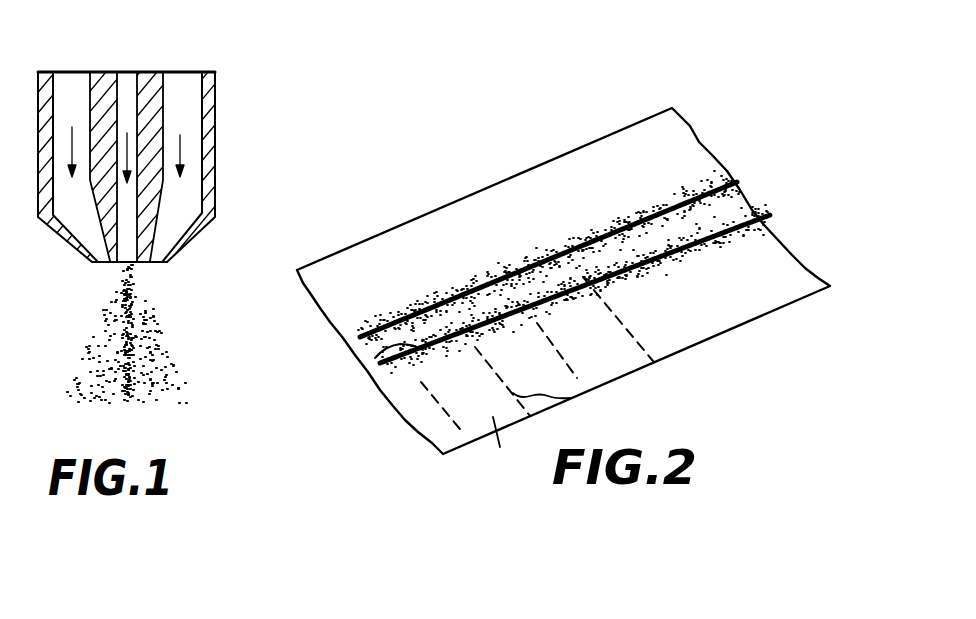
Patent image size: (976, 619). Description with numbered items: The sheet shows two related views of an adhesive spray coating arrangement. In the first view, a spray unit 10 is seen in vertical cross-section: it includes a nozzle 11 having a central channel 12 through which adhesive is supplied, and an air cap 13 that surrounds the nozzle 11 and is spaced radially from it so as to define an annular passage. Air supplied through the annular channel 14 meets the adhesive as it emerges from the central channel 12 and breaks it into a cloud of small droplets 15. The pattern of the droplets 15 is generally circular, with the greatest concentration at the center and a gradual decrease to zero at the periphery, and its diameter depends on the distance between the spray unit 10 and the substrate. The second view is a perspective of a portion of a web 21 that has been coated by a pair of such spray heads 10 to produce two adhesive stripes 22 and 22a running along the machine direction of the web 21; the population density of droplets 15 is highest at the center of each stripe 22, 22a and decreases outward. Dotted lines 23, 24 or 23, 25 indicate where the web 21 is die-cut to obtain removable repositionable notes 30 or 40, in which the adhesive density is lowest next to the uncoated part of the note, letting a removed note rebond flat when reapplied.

In FIG. 1, the spray unit 10 is at (236, 166).
In FIG. 1, the nozzle 11 is at (150, 83).
In FIG. 1, the central channel 12 is at (125, 85).
In FIG. 1, the air cap 13 is at (215, 83).
In FIG. 1, the annular air channel 14 is at (70, 87).
In FIG. 1, the adhesive droplets 15 is at (162, 368).
In FIG. 2, the web 21 is at (754, 332).
In FIG. 2, the adhesive stripe 22 is at (765, 188).
In FIG. 2, the second adhesive stripe 22a is at (730, 152).
In FIG. 2, the dotted cut lines 23 is at (432, 427).
In FIG. 2, the dotted cut line 24 is at (375, 358).
In FIG. 2, the dotted cut line 25 is at (538, 290).
In FIG. 2, the removable repositionable note 30 is at (498, 451).
In FIG. 2, the removable repositionable note 40 is at (605, 358).